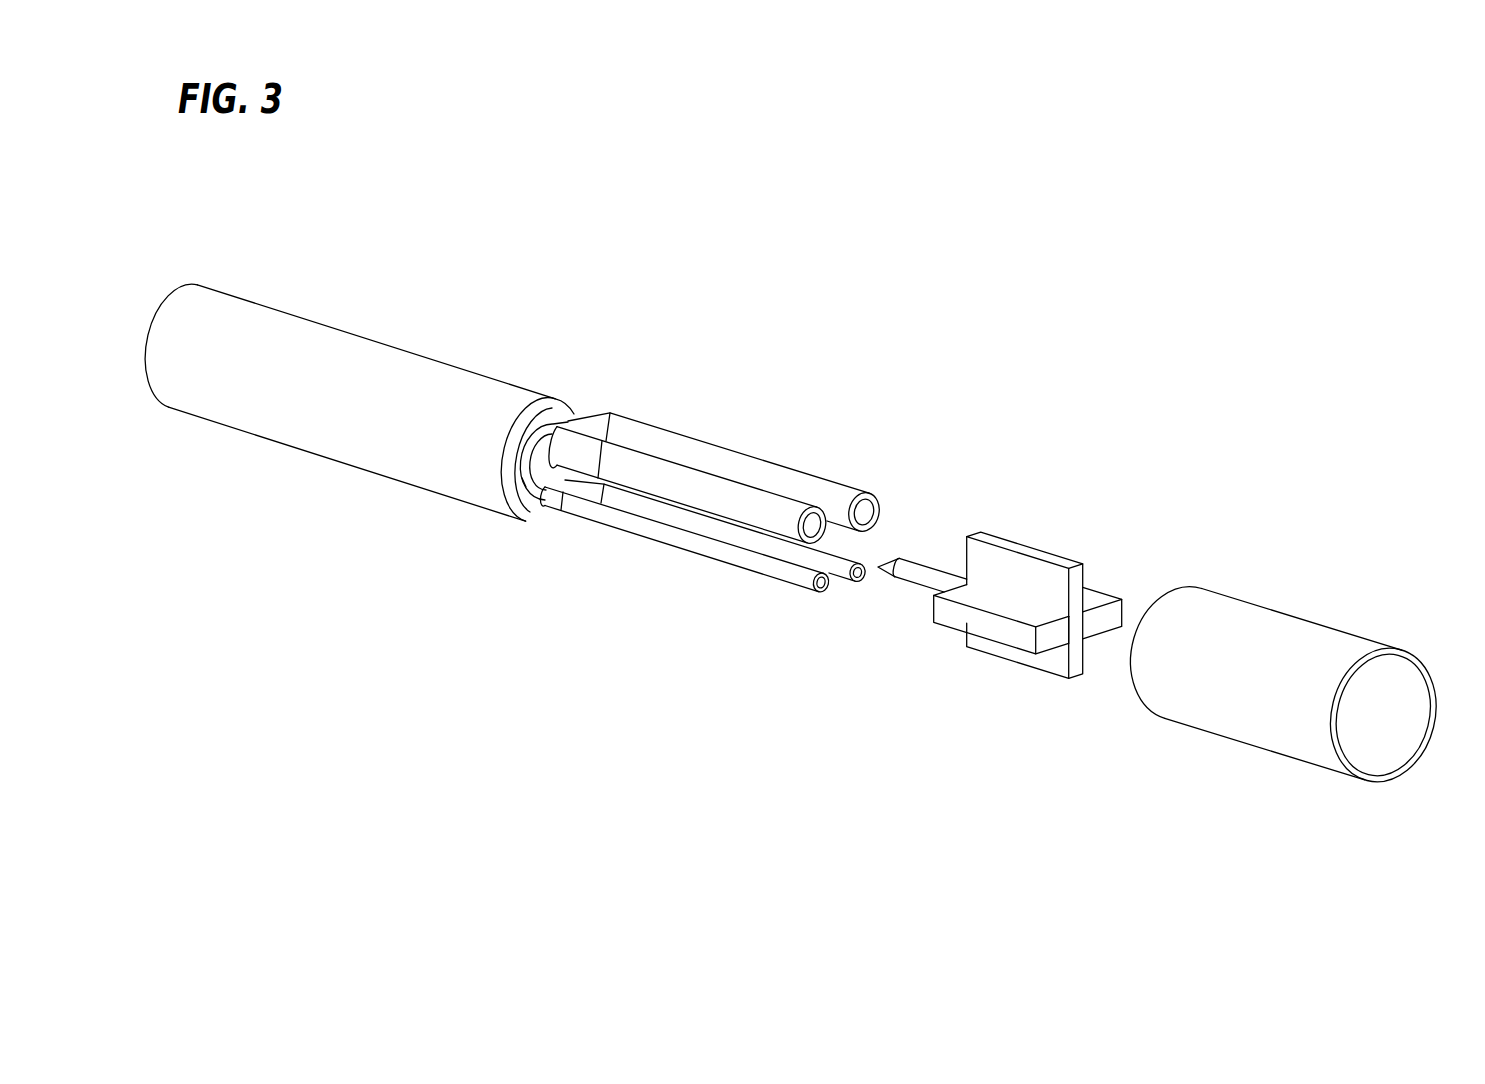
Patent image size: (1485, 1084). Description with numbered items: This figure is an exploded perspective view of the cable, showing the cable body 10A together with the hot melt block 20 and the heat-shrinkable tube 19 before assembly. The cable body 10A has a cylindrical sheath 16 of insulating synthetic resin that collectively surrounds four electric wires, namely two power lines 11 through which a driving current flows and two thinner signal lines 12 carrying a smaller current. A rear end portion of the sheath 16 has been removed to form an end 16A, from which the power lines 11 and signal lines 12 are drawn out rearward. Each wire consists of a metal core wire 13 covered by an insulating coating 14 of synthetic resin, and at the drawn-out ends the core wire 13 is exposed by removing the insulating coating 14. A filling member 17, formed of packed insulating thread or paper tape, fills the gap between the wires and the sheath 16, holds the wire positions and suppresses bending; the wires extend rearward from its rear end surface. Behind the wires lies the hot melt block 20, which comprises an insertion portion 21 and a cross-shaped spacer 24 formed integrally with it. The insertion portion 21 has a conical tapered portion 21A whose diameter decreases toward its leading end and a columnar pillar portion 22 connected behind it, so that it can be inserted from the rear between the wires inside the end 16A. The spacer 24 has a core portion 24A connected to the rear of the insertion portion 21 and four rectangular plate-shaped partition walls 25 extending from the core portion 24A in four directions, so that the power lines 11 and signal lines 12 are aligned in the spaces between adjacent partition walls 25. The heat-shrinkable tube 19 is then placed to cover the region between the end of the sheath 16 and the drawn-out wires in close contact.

The cable body 10A is at (587, 326).
The power line 11 is at (720, 492).
The signal line 12 is at (700, 546).
The core wire 13 is at (864, 512).
The insulating coating 14 is at (872, 494).
The sheath 16 is at (419, 376).
The end 16A is at (552, 397).
The filling member 17 is at (576, 414).
The heat-shrinkable tube 19 is at (1262, 603).
The hot melt block 20 is at (1015, 740).
The insertion portion 21 is at (970, 695).
The tapered portion 21A is at (892, 572).
The pillar portion 22 is at (920, 582).
The spacer 24 is at (1012, 673).
The core portion 24A is at (1077, 627).
The partition wall 25 is at (987, 622).